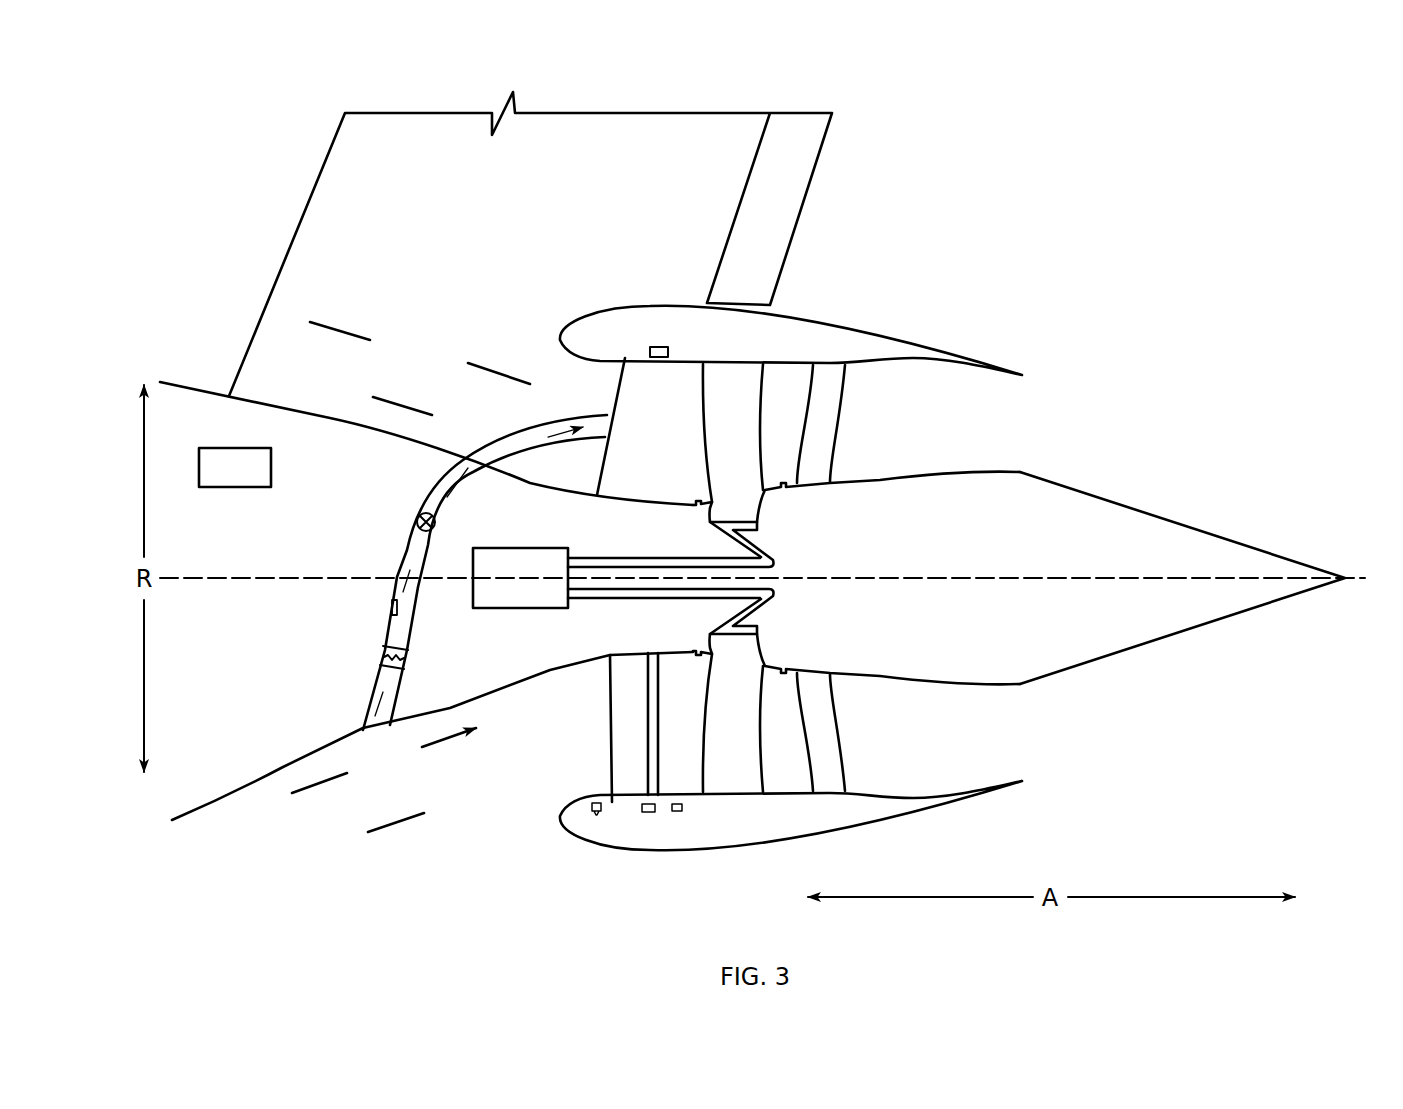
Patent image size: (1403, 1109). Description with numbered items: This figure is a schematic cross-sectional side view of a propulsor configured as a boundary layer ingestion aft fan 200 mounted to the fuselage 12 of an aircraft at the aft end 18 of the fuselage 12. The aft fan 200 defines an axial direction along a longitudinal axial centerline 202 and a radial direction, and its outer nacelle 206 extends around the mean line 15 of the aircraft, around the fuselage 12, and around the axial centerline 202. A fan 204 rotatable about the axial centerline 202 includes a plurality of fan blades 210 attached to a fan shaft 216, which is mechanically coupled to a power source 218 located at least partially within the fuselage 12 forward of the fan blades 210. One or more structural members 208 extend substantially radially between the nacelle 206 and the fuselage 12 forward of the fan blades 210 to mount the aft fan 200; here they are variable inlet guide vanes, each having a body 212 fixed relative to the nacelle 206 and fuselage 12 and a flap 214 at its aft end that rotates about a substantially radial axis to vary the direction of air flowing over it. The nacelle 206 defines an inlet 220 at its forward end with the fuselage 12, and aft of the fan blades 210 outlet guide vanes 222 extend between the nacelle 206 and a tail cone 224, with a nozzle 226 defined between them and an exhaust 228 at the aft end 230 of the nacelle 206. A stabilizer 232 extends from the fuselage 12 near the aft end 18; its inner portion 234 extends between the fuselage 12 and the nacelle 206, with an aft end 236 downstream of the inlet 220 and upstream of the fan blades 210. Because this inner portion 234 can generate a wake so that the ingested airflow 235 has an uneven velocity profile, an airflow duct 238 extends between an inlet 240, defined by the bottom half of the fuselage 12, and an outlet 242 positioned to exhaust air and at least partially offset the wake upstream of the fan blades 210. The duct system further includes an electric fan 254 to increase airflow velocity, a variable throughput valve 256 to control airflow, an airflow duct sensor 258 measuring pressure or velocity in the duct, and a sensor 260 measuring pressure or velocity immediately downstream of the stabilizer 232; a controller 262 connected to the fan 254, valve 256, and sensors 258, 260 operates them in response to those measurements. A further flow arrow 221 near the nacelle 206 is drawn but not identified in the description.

The fuselage 12 is at (200, 385).
The mean line 15 is at (1150, 578).
The aft end 18 is at (890, 213).
The aft fan 200 is at (1088, 328).
The axial centerline 202 is at (1277, 577).
The fan 204 is at (757, 412).
The outer nacelle 206 is at (783, 310).
The structural members 208 is at (623, 765).
The fan blades 210 is at (822, 375).
The body 212 is at (583, 807).
The flap 214 is at (660, 782).
The fan shaft 216 is at (660, 558).
The power source 218 is at (510, 608).
The inlet 220 is at (582, 740).
The airflow 221 is at (546, 829).
The outlet guide vanes 222 is at (830, 745).
The tail cone 224 is at (1117, 500).
The nozzle 226 is at (1002, 422).
The exhaust 228 is at (1017, 720).
The aft end 230 is at (1032, 780).
The stabilizer 232 is at (602, 127).
The inner portion 234 is at (547, 362).
The airflow 235 is at (487, 363).
The aft end 236 is at (612, 452).
The airflow duct 238 is at (403, 542).
The inlet 240 is at (377, 740).
The outlet 242 is at (622, 423).
The fan 254 is at (383, 652).
The valve 256 is at (417, 513).
The airflow duct sensor 258 is at (388, 605).
The sensor 260 is at (668, 347).
The controller 262 is at (230, 490).